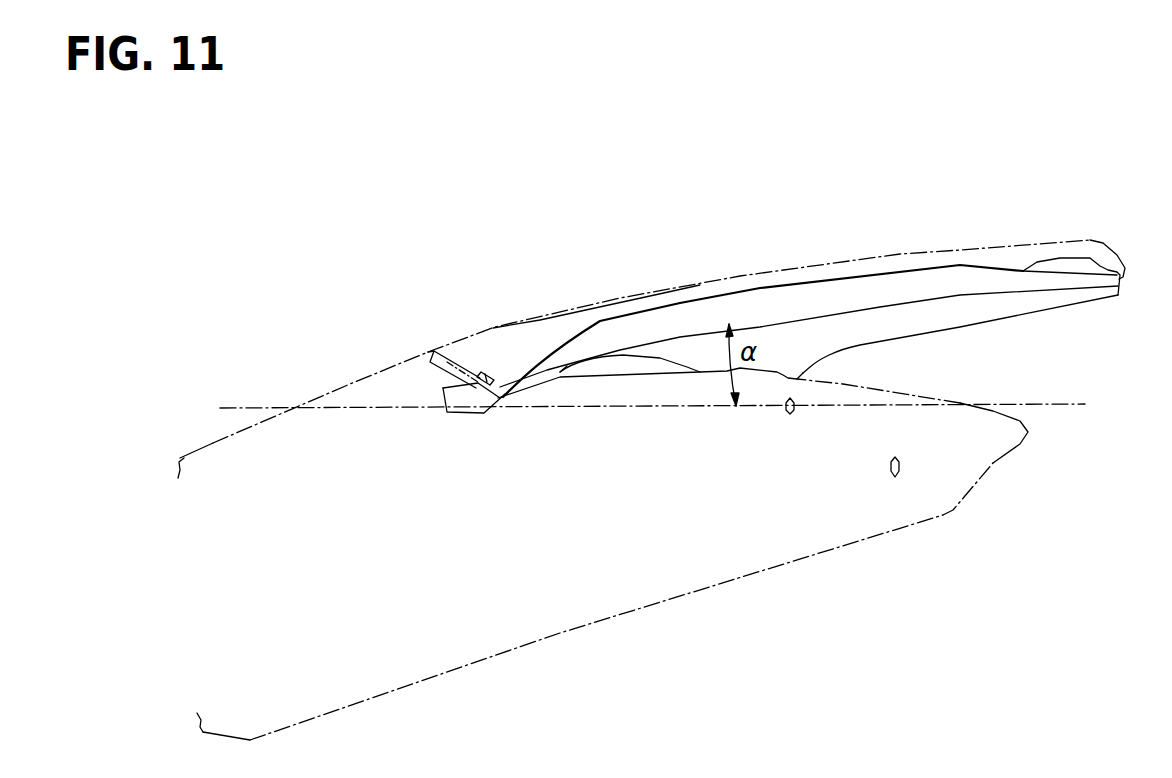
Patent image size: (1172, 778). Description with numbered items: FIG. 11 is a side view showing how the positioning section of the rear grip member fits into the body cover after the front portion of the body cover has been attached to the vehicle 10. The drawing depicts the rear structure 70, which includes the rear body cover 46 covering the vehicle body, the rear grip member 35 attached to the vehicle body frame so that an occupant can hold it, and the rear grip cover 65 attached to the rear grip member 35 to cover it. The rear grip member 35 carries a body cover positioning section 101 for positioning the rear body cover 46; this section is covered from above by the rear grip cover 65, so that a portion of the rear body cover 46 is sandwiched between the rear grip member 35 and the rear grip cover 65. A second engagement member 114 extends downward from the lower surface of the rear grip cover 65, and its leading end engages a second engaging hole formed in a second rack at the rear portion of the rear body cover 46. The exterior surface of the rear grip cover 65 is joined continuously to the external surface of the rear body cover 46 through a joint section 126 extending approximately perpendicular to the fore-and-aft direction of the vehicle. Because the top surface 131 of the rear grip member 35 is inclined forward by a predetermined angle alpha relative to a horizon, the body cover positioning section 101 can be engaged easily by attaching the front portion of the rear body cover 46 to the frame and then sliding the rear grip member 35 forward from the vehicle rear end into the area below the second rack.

The wiper device 10 is at (963, 148).
The rear grip member 35 is at (987, 309).
The rear body cover 46 is at (347, 382).
The rear grip cover 65 is at (738, 277).
The rear structure 70 is at (995, 175).
The body cover positioning section 101 is at (478, 357).
The second engagement member 114 is at (484, 368).
The joint section 126 is at (456, 365).
The top surface of the rear grip member 131 is at (447, 388).